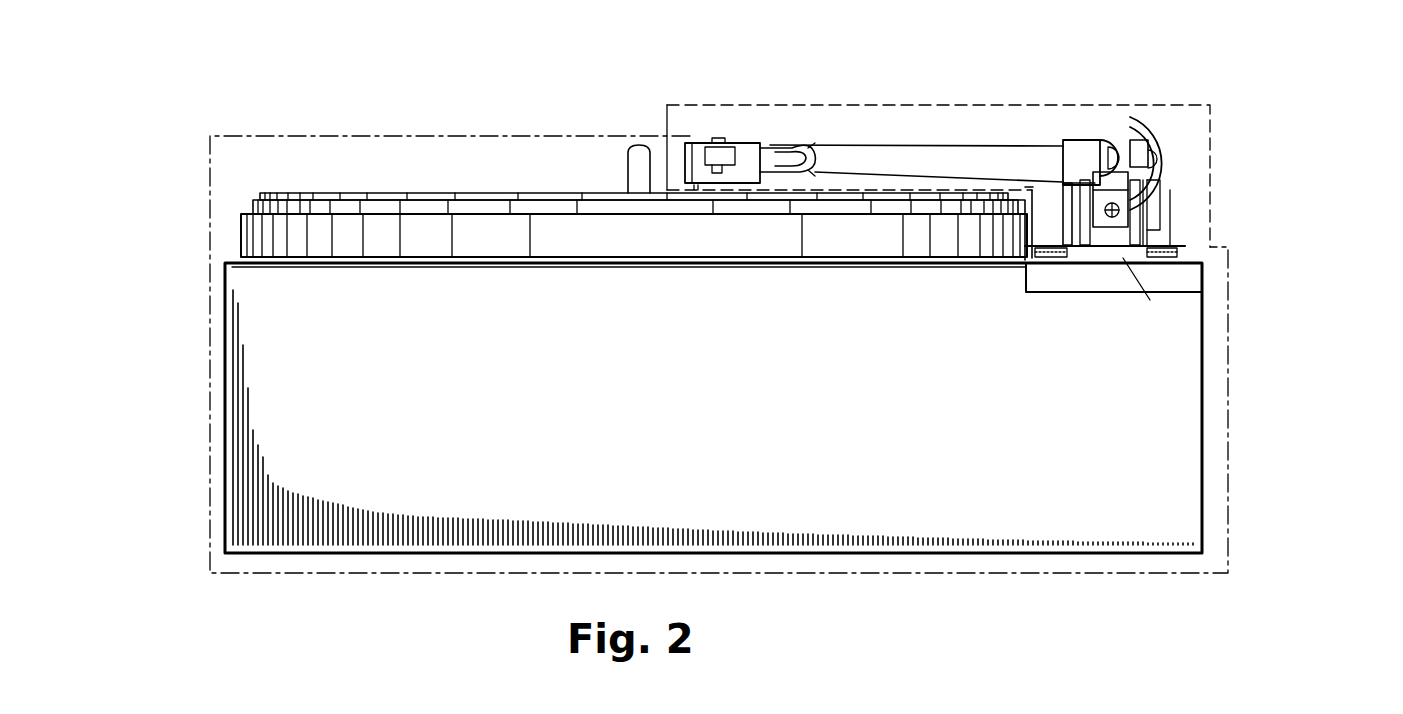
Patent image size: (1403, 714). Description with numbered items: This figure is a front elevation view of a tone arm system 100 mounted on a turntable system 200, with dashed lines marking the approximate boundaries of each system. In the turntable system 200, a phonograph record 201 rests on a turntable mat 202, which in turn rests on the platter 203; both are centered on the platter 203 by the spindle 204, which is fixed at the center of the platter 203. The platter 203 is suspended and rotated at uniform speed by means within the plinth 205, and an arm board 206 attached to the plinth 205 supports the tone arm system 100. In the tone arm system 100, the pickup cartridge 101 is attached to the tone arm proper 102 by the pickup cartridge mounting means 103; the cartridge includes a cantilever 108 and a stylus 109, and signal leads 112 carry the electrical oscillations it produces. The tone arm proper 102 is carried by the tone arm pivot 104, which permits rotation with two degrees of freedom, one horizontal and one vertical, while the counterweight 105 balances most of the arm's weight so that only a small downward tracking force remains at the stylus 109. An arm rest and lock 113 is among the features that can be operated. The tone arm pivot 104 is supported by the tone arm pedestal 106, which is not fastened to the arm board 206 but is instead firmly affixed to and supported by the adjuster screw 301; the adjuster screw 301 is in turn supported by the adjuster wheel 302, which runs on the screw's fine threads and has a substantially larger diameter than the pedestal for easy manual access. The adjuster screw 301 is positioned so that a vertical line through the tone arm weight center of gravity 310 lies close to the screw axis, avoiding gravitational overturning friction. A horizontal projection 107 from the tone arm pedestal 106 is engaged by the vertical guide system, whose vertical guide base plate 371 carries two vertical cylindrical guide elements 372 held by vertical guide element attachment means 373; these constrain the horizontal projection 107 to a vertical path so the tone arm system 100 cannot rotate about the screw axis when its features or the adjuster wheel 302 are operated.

The tone arm system 100 is at (926, 98).
The pickup cartridge 101 is at (690, 157).
The tone arm proper 102 is at (962, 148).
The pickup cartridge mounting means 103 is at (718, 137).
The tone arm pivot 104 is at (1068, 160).
The counterweight 105 is at (1183, 118).
The tone arm pedestal 106 is at (1175, 218).
The horizontal projection 107 is at (1112, 230).
The cantilever 108 is at (703, 184).
The stylus 109 is at (698, 186).
The signal leads 112 is at (778, 142).
The arm rest and lock 113 is at (1112, 140).
The turntable system 200 is at (186, 368).
The phonograph record 201 is at (478, 195).
The turntable mat 202 is at (565, 182).
The platter 203 is at (241, 231).
The spindle 204 is at (610, 168).
The plinth 205 is at (233, 437).
The arm board 206 is at (1202, 285).
The adjuster screw 301 is at (1180, 240).
The adjuster wheel 302 is at (1180, 250).
The tone arm weight center of gravity 310 is at (1110, 230).
The vertical guide base plate 371 is at (1128, 260).
The vertical guide elements 372 is at (1030, 243).
The vertical guide element attachment means 373 is at (1063, 150).